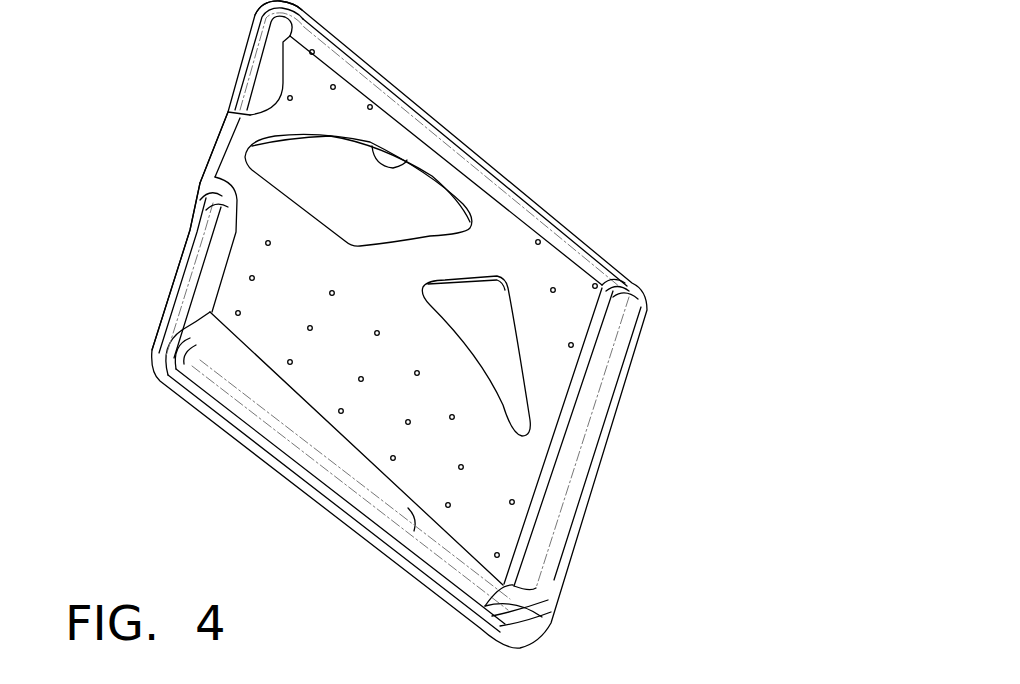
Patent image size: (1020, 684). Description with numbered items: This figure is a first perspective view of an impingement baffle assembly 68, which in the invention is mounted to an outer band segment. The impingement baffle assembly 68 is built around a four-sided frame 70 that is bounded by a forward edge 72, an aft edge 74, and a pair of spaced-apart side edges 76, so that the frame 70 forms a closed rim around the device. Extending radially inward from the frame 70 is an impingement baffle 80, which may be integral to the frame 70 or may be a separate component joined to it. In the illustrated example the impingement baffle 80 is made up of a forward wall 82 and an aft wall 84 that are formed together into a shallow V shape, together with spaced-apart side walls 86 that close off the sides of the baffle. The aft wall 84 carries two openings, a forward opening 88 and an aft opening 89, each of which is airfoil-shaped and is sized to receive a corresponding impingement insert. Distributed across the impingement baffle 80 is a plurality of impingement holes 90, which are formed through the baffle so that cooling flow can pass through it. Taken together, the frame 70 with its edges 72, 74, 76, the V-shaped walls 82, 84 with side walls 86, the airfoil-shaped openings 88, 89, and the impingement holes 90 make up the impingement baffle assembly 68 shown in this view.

The impingement baffle assembly 68 is at (488, 92).
The four-sided frame 70 is at (250, 25).
The forward edge 72 is at (192, 230).
The aft edge 74 is at (608, 443).
The side edges 76 is at (615, 272).
The impingement baffle 80 is at (500, 157).
The forward wall 82 is at (265, 62).
The aft wall 84 is at (340, 108).
The side walls 86 is at (237, 387).
The forward opening 88 is at (395, 167).
The aft opening 89 is at (497, 277).
The impingement holes 90 is at (556, 292).